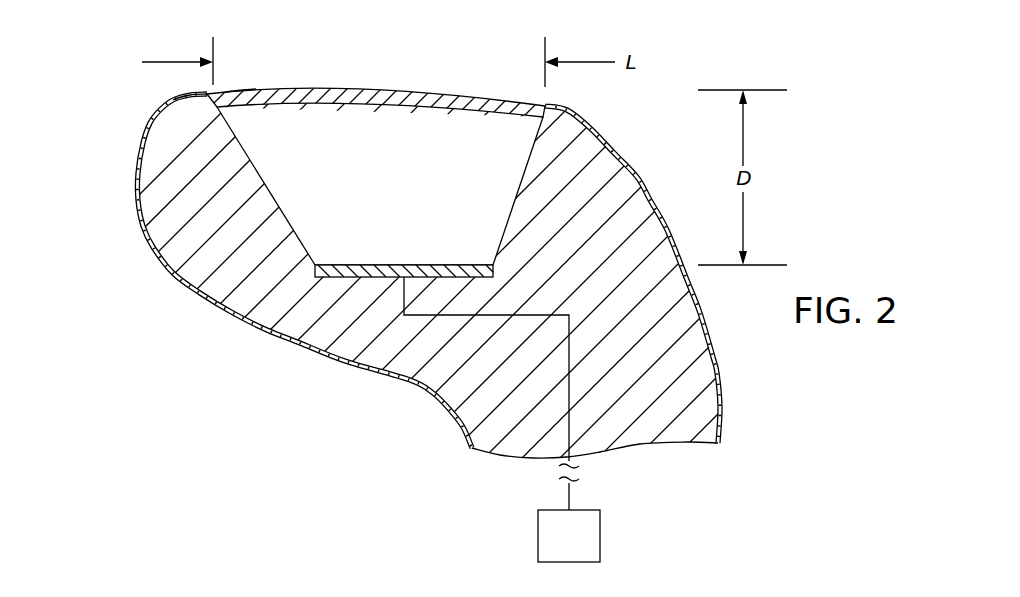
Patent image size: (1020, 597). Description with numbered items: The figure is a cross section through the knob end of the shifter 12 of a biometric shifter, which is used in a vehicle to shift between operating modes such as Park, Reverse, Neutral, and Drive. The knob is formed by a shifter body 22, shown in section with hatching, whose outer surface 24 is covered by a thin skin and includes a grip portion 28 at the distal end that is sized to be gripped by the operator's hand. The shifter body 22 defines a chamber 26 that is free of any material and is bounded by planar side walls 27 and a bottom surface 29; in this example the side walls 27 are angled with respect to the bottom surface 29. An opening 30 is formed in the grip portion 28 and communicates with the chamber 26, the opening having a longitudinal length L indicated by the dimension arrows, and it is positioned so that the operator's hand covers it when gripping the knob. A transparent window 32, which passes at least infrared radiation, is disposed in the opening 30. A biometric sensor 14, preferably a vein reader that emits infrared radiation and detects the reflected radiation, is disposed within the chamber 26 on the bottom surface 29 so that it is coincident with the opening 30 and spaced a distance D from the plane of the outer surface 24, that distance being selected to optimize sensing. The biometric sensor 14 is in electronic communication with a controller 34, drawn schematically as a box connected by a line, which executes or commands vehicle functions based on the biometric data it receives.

The shifter 12 is at (128, 142).
The biometric sensor 14 is at (313, 268).
The shifter body 22 is at (163, 210).
The outer surface 24 is at (138, 183).
The chamber 26 is at (391, 193).
The planar side walls 27 is at (267, 180).
The grip portion 28 is at (185, 96).
The bottom surface 29 is at (370, 267).
The opening 30 is at (244, 98).
The window 32 is at (368, 97).
The controller 34 is at (559, 551).